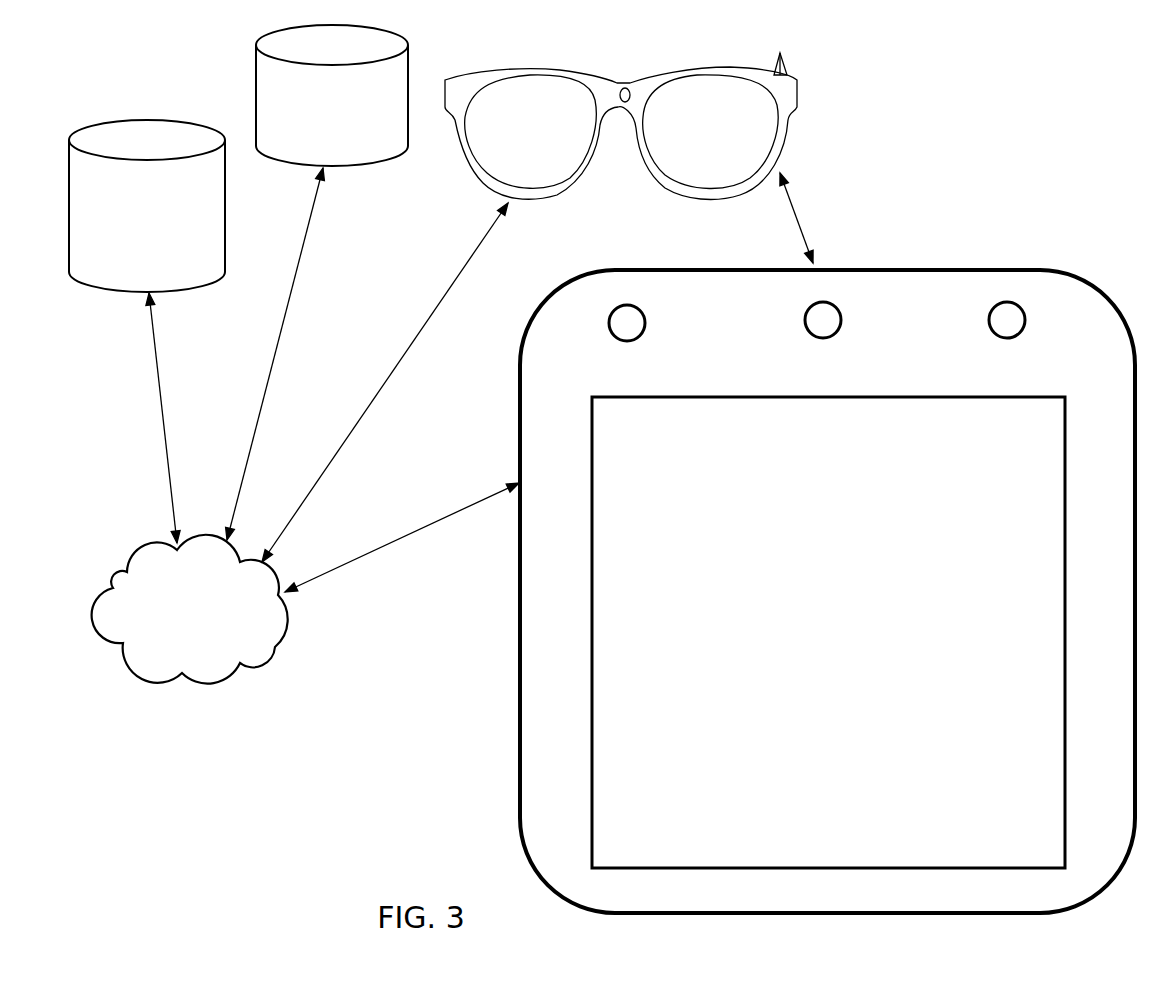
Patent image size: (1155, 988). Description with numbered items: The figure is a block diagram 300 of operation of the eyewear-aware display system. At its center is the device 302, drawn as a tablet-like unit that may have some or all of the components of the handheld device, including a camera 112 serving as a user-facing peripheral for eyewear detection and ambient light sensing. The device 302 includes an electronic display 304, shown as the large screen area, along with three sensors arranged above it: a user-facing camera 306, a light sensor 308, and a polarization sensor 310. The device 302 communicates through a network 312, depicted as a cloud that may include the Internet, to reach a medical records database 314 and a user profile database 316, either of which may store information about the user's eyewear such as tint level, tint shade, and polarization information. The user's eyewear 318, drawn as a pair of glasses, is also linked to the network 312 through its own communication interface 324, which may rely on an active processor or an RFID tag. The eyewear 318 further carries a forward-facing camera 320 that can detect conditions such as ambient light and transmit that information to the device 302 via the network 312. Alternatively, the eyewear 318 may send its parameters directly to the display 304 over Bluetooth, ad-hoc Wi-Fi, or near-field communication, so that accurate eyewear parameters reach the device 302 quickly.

The camera 112 is at (479, 380).
The block diagram 300 is at (932, 120).
The device 302 is at (947, 267).
The electronic display 304 is at (817, 639).
The user-facing camera 306 is at (633, 323).
The light sensor 308 is at (829, 320).
The polarization sensor 310 is at (1013, 320).
The network 312 is at (177, 621).
The medical records database 314 is at (145, 133).
The user profile database 316 is at (305, 37).
The eyewear 318 is at (458, 78).
The forward-facing camera 320 is at (623, 83).
The communication interface 324 is at (781, 56).